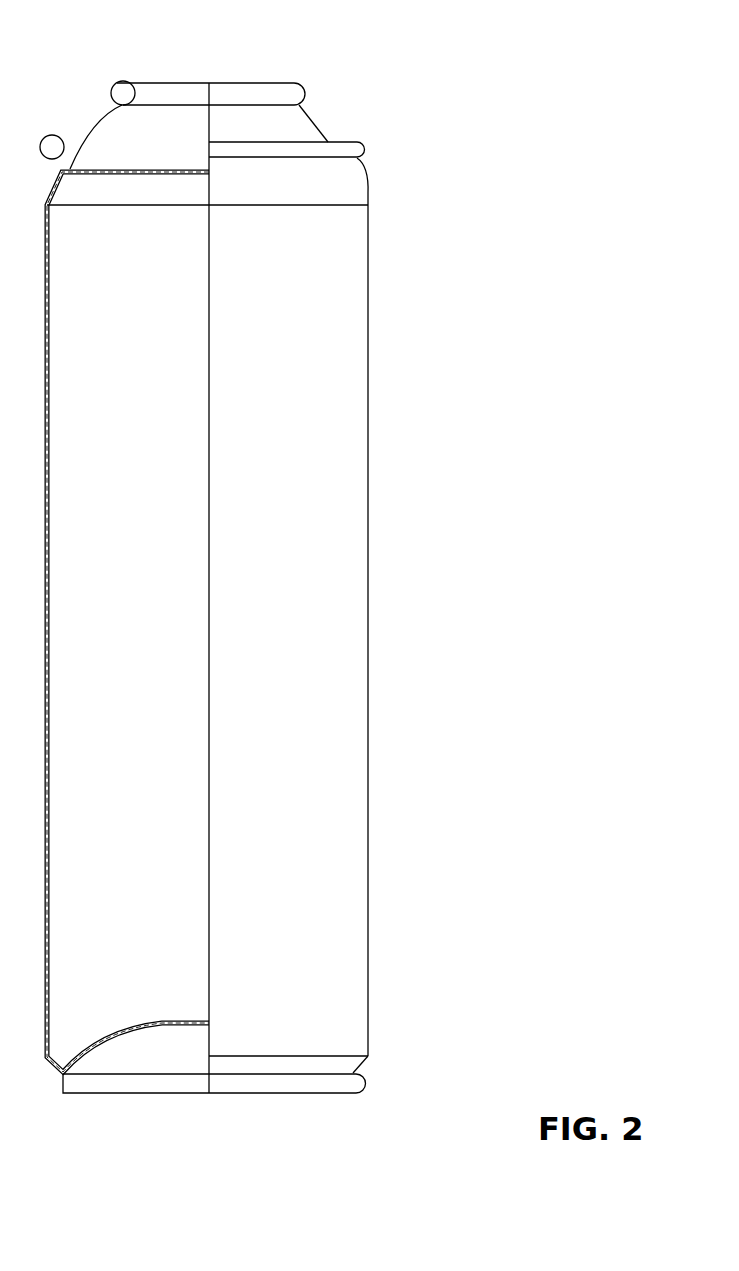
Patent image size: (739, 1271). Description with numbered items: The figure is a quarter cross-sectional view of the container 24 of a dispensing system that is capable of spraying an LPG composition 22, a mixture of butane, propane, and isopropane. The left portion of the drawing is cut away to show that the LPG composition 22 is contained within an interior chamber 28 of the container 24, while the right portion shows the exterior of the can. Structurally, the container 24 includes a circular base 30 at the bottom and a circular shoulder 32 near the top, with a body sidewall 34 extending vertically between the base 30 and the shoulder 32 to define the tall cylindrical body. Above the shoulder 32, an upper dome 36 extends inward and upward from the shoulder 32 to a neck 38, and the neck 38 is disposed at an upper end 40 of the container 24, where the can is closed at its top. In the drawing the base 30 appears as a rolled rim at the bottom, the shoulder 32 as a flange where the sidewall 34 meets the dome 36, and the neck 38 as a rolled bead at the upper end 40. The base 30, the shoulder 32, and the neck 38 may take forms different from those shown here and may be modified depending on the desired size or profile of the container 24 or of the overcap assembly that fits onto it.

The LPG composition 22 is at (144, 560).
The container 24 is at (369, 435).
The interior chamber 28 is at (144, 690).
The circular base 30 is at (368, 1082).
The circular shoulder 32 is at (350, 148).
The body sidewall 34 is at (350, 612).
The upper dome 36 is at (320, 120).
The neck 38 is at (305, 87).
The upper end 40 is at (157, 83).